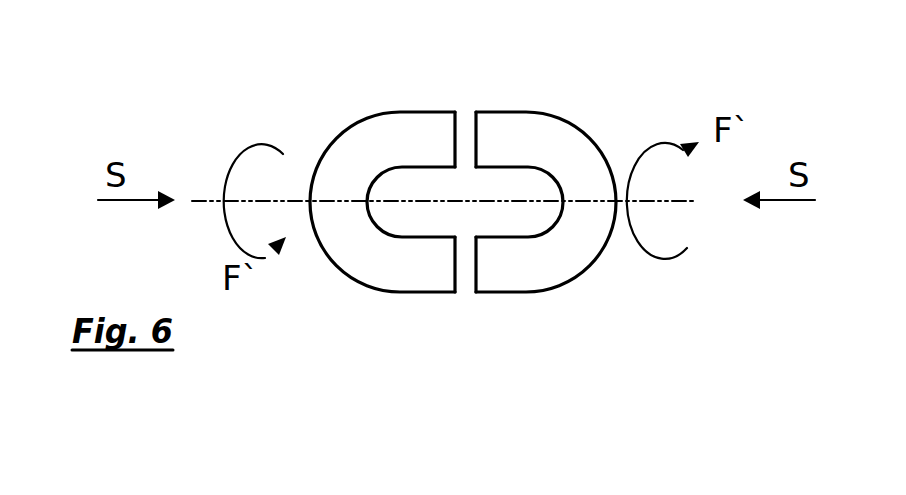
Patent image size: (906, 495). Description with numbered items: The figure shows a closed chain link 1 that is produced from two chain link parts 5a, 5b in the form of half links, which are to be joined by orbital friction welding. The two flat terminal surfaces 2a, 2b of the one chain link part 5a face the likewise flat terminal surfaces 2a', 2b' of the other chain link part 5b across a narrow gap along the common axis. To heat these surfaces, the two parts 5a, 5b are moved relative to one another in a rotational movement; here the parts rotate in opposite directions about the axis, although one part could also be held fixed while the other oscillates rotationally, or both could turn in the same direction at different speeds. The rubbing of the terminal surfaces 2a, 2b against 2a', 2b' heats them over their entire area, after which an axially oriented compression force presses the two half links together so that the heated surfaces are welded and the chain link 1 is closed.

The chain link 1 is at (280, 394).
The chain link part 5a is at (377, 127).
The chain link part 5b is at (547, 127).
The terminal surface 2a is at (434, 100).
The terminal surface 2a' is at (500, 100).
The terminal surface 2b is at (433, 307).
The terminal surface 2b' is at (503, 307).